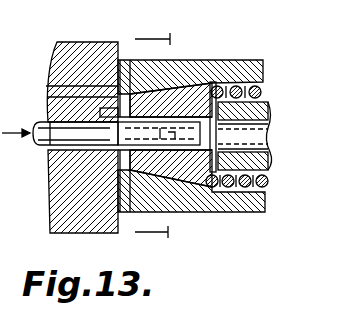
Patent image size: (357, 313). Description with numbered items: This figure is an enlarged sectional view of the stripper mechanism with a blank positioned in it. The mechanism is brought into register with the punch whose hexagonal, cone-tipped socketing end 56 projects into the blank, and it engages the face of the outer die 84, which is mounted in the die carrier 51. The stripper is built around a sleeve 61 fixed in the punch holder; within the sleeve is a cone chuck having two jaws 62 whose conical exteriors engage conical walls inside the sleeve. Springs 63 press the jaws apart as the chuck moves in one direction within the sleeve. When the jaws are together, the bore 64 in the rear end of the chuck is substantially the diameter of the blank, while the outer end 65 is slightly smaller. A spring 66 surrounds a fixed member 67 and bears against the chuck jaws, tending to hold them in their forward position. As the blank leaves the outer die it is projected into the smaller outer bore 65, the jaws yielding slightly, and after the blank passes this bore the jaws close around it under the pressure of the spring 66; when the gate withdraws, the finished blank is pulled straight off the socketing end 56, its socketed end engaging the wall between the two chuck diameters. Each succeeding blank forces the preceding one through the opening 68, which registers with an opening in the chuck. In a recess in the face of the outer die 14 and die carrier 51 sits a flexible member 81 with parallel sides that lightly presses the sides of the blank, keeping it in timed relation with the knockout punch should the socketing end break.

The outer die 14 is at (165, 137).
The die carrier 51 is at (52, 222).
The socketing end 56 is at (63, 133).
The sleeve 61 is at (195, 117).
The jaws 62 is at (132, 106).
The springs 63 is at (195, 198).
The bore 64 is at (213, 84).
The outer end 65 is at (122, 86).
The spring 66 is at (264, 84).
The fixed member 67 is at (266, 102).
The opening 68 is at (270, 150).
The flexible member 81 is at (108, 112).
The die 84 is at (110, 113).